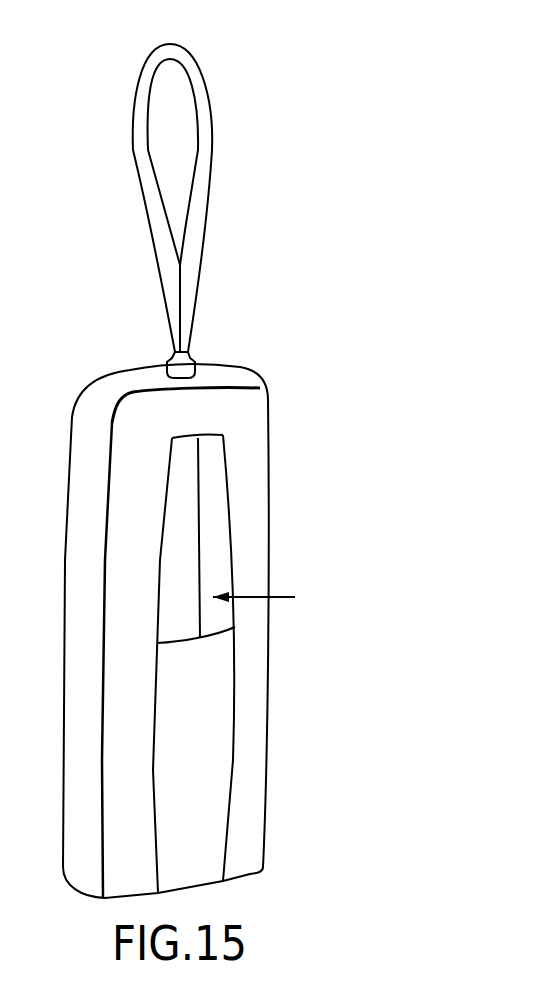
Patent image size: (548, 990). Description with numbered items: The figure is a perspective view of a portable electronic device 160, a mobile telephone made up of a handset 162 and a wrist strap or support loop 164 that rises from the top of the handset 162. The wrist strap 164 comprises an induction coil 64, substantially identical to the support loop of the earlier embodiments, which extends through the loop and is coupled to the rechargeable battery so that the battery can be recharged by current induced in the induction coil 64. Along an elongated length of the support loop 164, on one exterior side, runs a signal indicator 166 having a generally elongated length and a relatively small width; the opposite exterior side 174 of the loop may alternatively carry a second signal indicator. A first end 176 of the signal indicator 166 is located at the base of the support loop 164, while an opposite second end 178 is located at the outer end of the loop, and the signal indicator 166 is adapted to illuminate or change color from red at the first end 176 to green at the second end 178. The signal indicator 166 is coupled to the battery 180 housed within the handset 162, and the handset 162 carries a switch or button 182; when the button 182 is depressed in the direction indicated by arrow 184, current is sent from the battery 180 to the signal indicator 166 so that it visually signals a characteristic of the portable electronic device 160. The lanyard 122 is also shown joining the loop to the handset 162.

The portable electronic device 160 is at (269, 617).
The handset 162 is at (267, 698).
The wrist strap 164 is at (207, 200).
The signal indicator 166 is at (212, 137).
The lanyard 122 is at (181, 178).
The opposite exterior side 174 is at (142, 184).
The first end 176 is at (190, 312).
The second end 178 is at (204, 70).
The induction coil 64 is at (149, 218).
The battery 180 is at (205, 755).
The button 182 is at (223, 572).
The arrow 184 is at (280, 598).